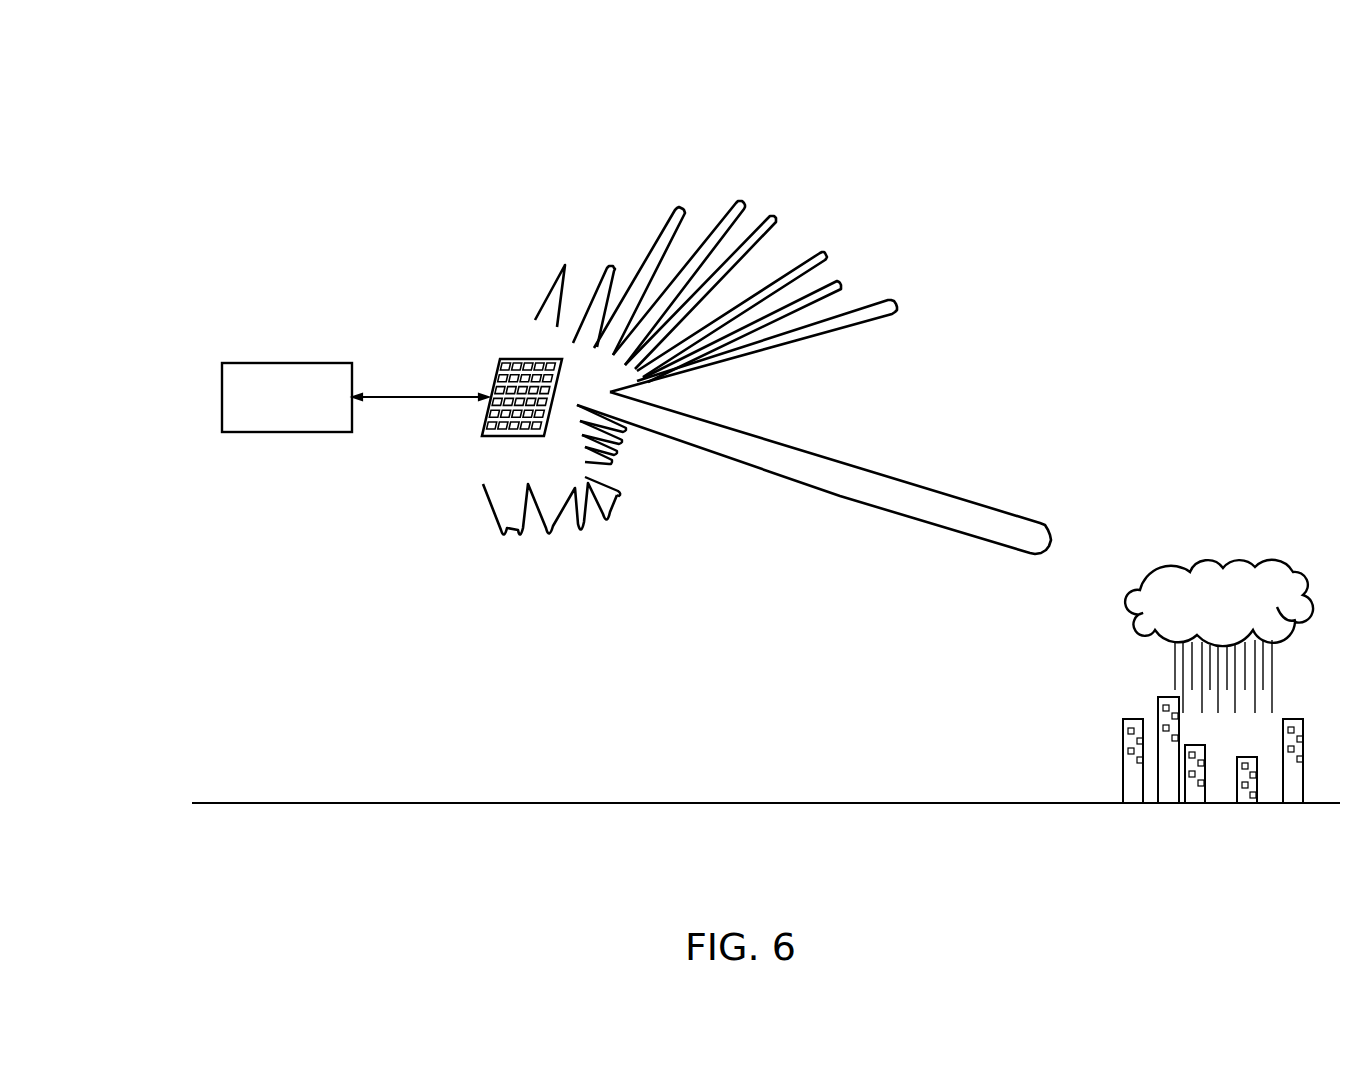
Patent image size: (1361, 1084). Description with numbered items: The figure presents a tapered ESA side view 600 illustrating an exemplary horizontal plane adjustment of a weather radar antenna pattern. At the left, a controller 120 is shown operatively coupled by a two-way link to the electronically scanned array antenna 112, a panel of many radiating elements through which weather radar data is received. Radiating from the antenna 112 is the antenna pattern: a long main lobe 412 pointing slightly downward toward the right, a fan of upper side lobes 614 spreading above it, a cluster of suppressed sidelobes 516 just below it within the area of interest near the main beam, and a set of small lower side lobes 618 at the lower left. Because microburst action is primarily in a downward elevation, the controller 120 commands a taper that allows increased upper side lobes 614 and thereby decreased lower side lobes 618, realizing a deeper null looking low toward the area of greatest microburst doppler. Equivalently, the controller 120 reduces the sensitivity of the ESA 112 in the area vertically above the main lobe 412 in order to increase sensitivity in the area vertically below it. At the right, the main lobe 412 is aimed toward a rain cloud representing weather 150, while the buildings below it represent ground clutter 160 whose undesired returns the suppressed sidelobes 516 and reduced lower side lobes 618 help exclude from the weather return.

The tapered ESA side view 600 is at (108, 122).
The controller 120 is at (232, 362).
The electronically scanned array antenna 112 is at (517, 360).
The upper side lobes 614 is at (857, 345).
The main lobe 412 is at (1013, 498).
The suppressed sidelobes 516 is at (638, 457).
The lower side lobes 618 is at (612, 538).
The weather 150 is at (1203, 543).
The ground clutter 160 is at (1108, 768).